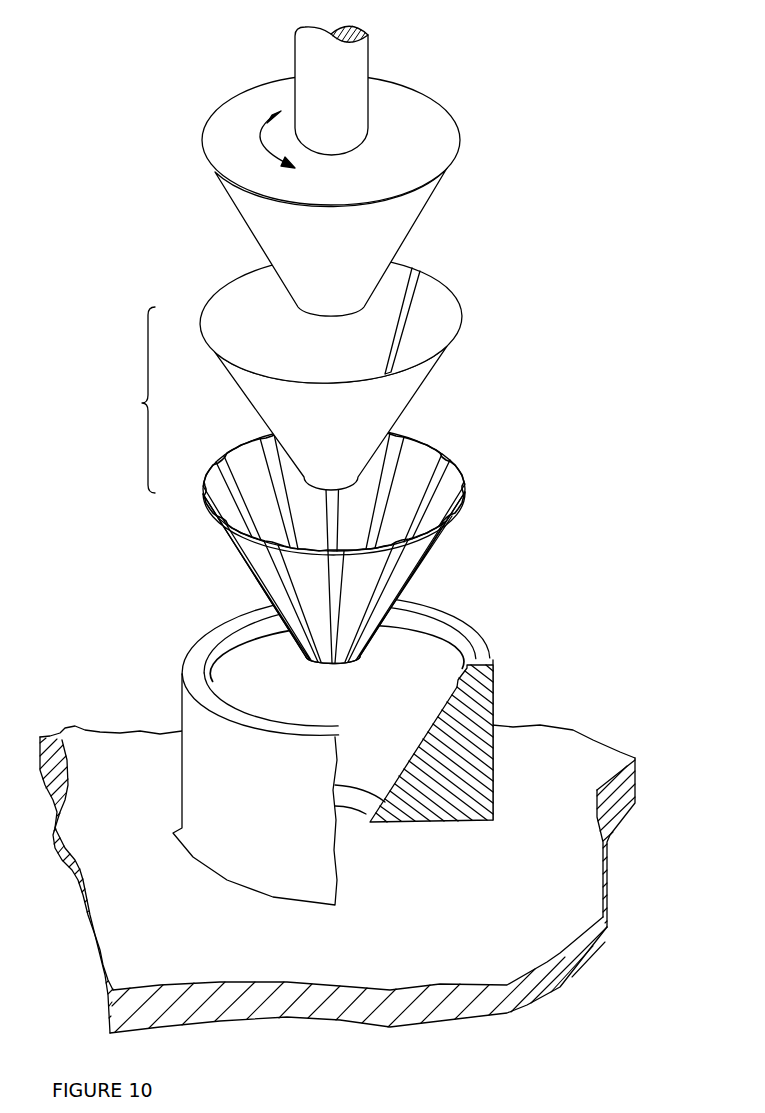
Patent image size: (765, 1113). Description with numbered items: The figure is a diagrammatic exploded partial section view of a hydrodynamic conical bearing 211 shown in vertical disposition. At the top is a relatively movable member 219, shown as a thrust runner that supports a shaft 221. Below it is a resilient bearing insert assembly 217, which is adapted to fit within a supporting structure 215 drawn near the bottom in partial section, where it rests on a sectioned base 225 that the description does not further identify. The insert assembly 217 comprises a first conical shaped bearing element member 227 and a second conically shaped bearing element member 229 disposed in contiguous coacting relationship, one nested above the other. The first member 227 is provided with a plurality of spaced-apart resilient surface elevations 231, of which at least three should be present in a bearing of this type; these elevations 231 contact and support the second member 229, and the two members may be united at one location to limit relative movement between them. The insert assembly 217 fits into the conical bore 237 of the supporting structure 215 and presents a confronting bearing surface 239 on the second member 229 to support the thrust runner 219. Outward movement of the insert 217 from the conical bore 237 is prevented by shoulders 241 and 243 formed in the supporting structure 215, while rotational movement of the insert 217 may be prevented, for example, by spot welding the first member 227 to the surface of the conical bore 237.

The conical bearing 211 is at (547, 328).
The supporting structure 215 is at (374, 747).
The resilient bearing insert assembly 217 is at (136, 403).
The relatively movable member 219 is at (453, 110).
The shaft 221 is at (367, 50).
The base plate 225 is at (575, 730).
The first conical shaped bearing element member 227 is at (374, 534).
The second conically shaped bearing element member 229 is at (334, 355).
The resilient surface elevations 231 is at (462, 483).
The conical bore 237 is at (447, 715).
The confronting bearing surface 239 is at (237, 307).
The shoulder 241 is at (457, 652).
The shoulder 243 is at (358, 800).